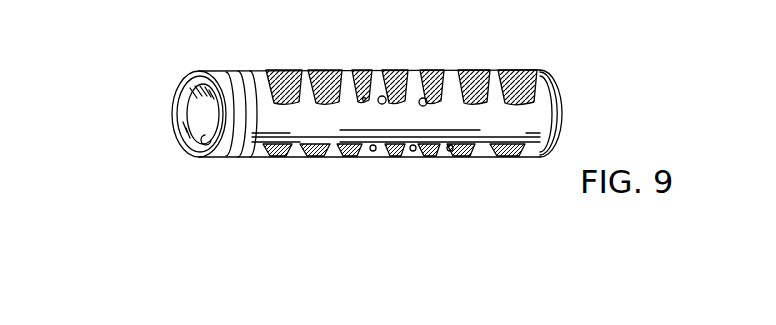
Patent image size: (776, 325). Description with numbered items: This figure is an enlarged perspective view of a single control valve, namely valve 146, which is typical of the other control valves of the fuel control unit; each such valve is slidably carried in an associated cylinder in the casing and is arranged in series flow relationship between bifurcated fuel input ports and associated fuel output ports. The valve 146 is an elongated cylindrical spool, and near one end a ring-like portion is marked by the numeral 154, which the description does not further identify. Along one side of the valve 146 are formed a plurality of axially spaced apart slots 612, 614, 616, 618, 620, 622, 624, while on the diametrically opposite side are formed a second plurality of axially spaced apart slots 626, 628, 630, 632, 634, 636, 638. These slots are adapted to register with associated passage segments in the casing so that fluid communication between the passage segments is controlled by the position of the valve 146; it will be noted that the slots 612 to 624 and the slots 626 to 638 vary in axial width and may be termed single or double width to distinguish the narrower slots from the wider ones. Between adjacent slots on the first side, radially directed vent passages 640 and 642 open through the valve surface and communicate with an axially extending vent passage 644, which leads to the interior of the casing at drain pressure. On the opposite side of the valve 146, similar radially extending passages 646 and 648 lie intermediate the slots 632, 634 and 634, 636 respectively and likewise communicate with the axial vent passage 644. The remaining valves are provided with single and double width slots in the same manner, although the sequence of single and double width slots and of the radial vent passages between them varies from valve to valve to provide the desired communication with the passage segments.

The valve 146 is at (542, 116).
The end ring / bore 154 is at (210, 106).
The slot 612 is at (265, 70).
The slot 614 is at (318, 70).
The slot 616 is at (354, 70).
The slot 618 is at (396, 70).
The slot 620 is at (432, 72).
The slot 622 is at (470, 84).
The slot 624 is at (532, 72).
The slot 626 is at (270, 156).
The slot 628 is at (310, 157).
The slot 630 is at (348, 157).
The slot 632 is at (385, 157).
The slot 634 is at (430, 156).
The slot 636 is at (463, 157).
The slot 638 is at (512, 157).
The radially directed vent passage 640 is at (386, 102).
The radially directed vent passage 642 is at (427, 103).
The axially extending vent passage 644 is at (250, 129).
The radially extending passage 646 is at (366, 100).
The radially extending passage 648 is at (456, 138).